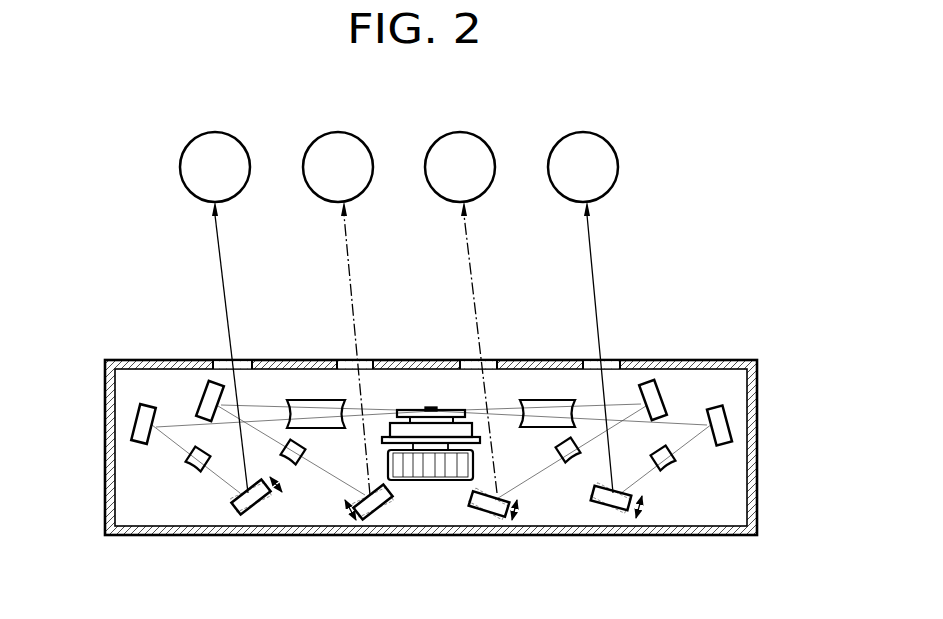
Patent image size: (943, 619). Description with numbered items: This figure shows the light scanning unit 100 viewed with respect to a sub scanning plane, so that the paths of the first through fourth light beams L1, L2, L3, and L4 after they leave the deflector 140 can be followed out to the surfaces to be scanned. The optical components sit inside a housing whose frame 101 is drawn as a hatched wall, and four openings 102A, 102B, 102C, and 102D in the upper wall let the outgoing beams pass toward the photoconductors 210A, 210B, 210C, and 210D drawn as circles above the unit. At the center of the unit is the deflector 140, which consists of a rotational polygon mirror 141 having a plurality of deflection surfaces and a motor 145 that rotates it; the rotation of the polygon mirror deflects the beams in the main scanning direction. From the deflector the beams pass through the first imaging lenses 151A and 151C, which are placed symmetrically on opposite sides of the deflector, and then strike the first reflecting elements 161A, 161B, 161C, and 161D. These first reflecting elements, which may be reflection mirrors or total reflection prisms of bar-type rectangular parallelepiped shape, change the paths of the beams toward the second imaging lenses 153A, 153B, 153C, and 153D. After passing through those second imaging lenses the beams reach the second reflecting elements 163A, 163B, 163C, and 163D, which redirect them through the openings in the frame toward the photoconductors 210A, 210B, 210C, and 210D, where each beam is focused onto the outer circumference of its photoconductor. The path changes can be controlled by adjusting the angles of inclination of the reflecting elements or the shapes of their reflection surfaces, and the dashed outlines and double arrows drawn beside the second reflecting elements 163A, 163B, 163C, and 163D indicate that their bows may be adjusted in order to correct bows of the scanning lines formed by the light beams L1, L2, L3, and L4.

The light scanning unit 100 is at (762, 341).
The frame 101 is at (716, 360).
The window 102A is at (608, 361).
The window 102B is at (488, 361).
The window 102C is at (364, 361).
The window 102D is at (243, 361).
The deflector 140 is at (431, 451).
The rotational polygon mirror 141 is at (435, 408).
The motor 145 is at (414, 480).
The first imaging lens 151A is at (552, 400).
The first imaging lens 151C is at (321, 400).
The second imaging lens 153A is at (666, 467).
The second imaging lens 153B is at (567, 463).
The second imaging lens 153C is at (293, 466).
The second imaging lens 153D is at (195, 466).
The first reflecting element 161A is at (733, 422).
The first reflecting element 161B is at (652, 383).
The first reflecting element 161C is at (207, 383).
The first reflecting element 161D is at (135, 424).
The second reflecting element 163A is at (622, 512).
The second reflecting element 163B is at (495, 510).
The second reflecting element 163C is at (377, 508).
The second reflecting element 163D is at (247, 506).
The photoconductor 210A is at (606, 188).
The photoconductor 210B is at (483, 188).
The photoconductor 210C is at (361, 188).
The photoconductor 210D is at (238, 188).
The first light beam L1 is at (593, 278).
The second light beam L2 is at (471, 278).
The third light beam L3 is at (350, 275).
The fourth light beam L4 is at (221, 268).